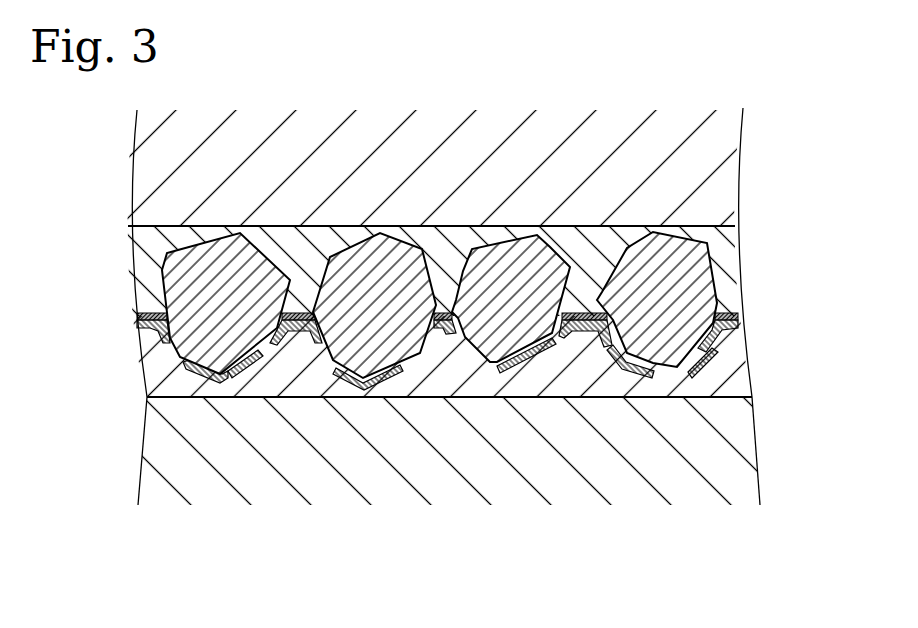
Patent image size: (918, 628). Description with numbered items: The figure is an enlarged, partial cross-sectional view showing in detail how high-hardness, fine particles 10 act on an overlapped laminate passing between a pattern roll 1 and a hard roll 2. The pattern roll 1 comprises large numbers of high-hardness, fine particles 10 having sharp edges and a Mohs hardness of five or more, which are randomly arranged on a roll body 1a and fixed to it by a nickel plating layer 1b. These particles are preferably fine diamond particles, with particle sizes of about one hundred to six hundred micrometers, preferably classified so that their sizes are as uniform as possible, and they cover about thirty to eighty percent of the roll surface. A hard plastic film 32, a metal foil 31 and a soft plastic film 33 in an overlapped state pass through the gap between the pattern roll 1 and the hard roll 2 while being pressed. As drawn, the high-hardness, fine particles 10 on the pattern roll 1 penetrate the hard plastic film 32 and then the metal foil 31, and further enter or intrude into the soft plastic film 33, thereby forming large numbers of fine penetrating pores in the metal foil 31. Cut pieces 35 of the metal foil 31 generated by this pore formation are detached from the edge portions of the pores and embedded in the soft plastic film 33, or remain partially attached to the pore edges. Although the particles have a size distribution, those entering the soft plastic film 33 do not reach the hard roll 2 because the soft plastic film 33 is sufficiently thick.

The pattern roll 1 is at (478, 252).
The roll body 1a is at (723, 138).
The nickel plating layer 1b is at (465, 271).
The hard roll 2 is at (740, 440).
The high-hardness, fine particles 10 is at (197, 292).
The metal foil 31 is at (745, 327).
The hard plastic film 32 is at (748, 315).
The soft plastic film 33 is at (733, 377).
The cut pieces 35 is at (348, 390).